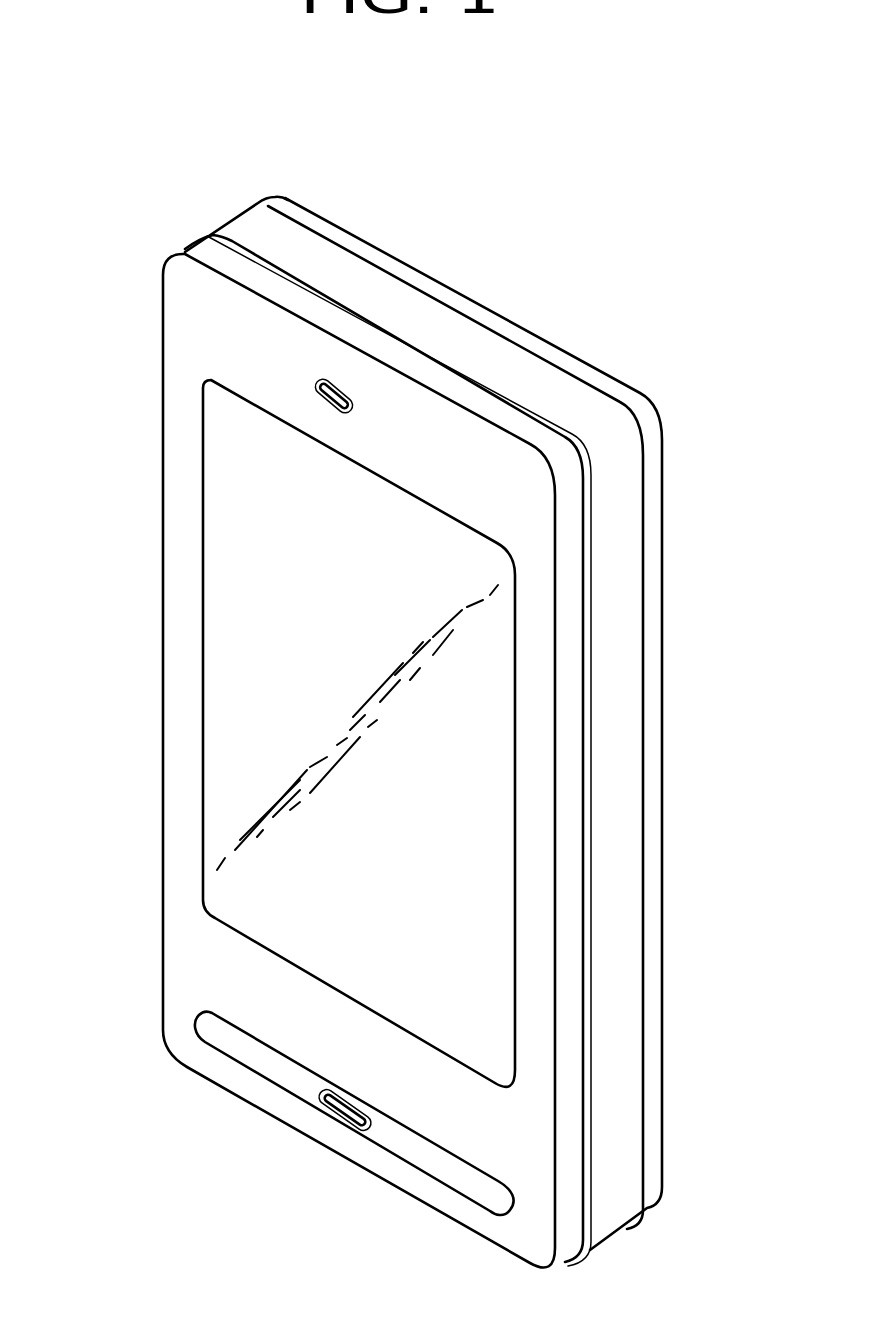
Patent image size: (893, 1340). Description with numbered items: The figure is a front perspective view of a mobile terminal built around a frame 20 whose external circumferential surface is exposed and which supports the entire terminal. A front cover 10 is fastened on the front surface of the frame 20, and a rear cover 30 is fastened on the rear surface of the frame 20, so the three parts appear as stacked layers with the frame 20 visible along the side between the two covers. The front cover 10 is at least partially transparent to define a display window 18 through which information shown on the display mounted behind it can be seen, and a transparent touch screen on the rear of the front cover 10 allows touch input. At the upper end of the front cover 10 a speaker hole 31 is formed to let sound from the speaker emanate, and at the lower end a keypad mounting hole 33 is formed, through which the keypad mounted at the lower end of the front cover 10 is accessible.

The front cover 10 is at (173, 583).
The display window 18 is at (220, 700).
The frame 20 is at (630, 697).
The rear cover 30 is at (653, 810).
The speaker hole 31 is at (323, 397).
The keypad mounting hole 33 is at (278, 1078).